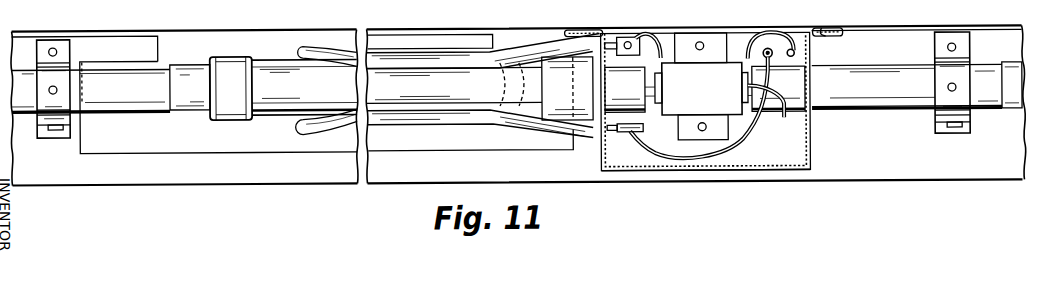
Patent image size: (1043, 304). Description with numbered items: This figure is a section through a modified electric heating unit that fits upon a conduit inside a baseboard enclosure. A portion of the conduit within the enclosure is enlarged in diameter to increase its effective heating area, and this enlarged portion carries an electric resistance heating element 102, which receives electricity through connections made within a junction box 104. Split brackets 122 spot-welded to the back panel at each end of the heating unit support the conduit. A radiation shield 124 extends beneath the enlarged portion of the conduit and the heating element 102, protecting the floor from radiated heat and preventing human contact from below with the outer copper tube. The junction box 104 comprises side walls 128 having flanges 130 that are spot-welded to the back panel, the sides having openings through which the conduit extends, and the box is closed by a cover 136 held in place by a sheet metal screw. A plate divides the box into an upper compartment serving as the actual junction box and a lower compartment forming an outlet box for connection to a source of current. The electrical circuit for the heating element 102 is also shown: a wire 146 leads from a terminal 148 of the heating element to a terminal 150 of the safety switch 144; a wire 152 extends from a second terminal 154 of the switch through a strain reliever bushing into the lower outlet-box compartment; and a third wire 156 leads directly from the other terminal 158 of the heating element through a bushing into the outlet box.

The electric resistance heating element 102 is at (445, 81).
The junction box 104 is at (873, 169).
The split brackets 122 is at (61, 137).
The radiation shield 124 is at (256, 152).
The side walls 128 is at (601, 165).
The flanges 130 is at (572, 33).
The cover 136 is at (720, 172).
The safety switch 144 is at (685, 113).
The wire 146 is at (655, 34).
The terminal of the heating element 148 is at (622, 38).
The terminal of the safety switch 150 is at (655, 98).
The wire 152 is at (773, 34).
The second terminal of the switch 154 is at (784, 119).
The third wire 156 is at (738, 146).
The other terminal of the heating element 158 is at (629, 134).